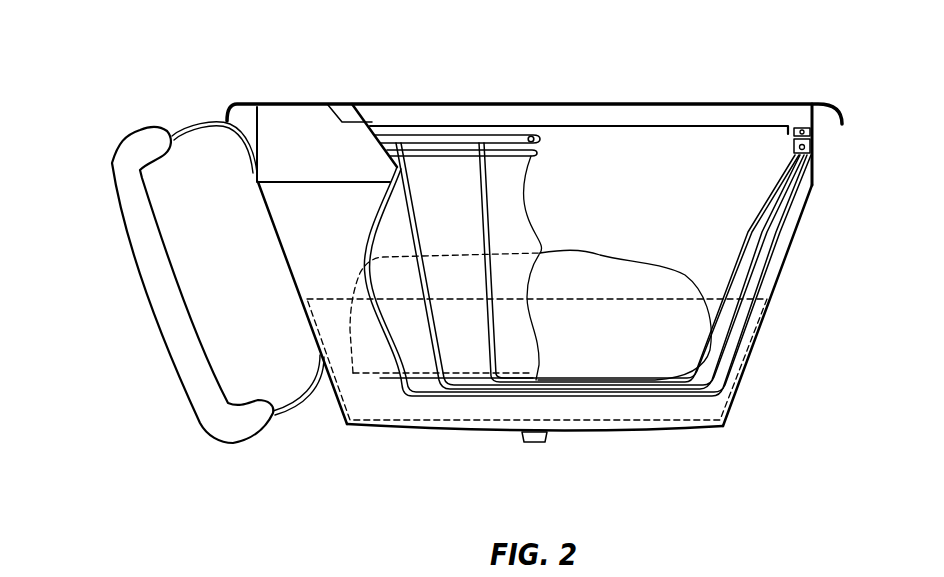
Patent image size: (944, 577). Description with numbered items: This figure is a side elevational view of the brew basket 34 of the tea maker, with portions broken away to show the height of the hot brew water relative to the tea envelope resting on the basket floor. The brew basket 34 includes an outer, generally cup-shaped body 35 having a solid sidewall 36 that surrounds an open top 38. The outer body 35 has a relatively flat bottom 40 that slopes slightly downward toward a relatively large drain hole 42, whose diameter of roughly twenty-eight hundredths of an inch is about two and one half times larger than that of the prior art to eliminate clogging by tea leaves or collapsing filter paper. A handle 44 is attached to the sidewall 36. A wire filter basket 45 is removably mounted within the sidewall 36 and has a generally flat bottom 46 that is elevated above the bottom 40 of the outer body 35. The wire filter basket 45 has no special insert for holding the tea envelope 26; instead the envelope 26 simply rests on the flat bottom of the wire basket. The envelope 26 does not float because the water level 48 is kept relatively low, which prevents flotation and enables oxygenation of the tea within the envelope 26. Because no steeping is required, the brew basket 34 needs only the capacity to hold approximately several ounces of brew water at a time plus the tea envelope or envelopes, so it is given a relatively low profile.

The tea envelope 26 is at (710, 330).
The brew basket 34 is at (665, 99).
The outer body 35 is at (288, 150).
The sidewall 36 is at (787, 263).
The open top 38 is at (352, 104).
The bottom 40 is at (697, 427).
The drain hole 42 is at (533, 443).
The handle 44 is at (127, 173).
The wire filter basket 45 is at (407, 187).
The flat bottom 46 is at (600, 402).
The water level 48 is at (720, 297).